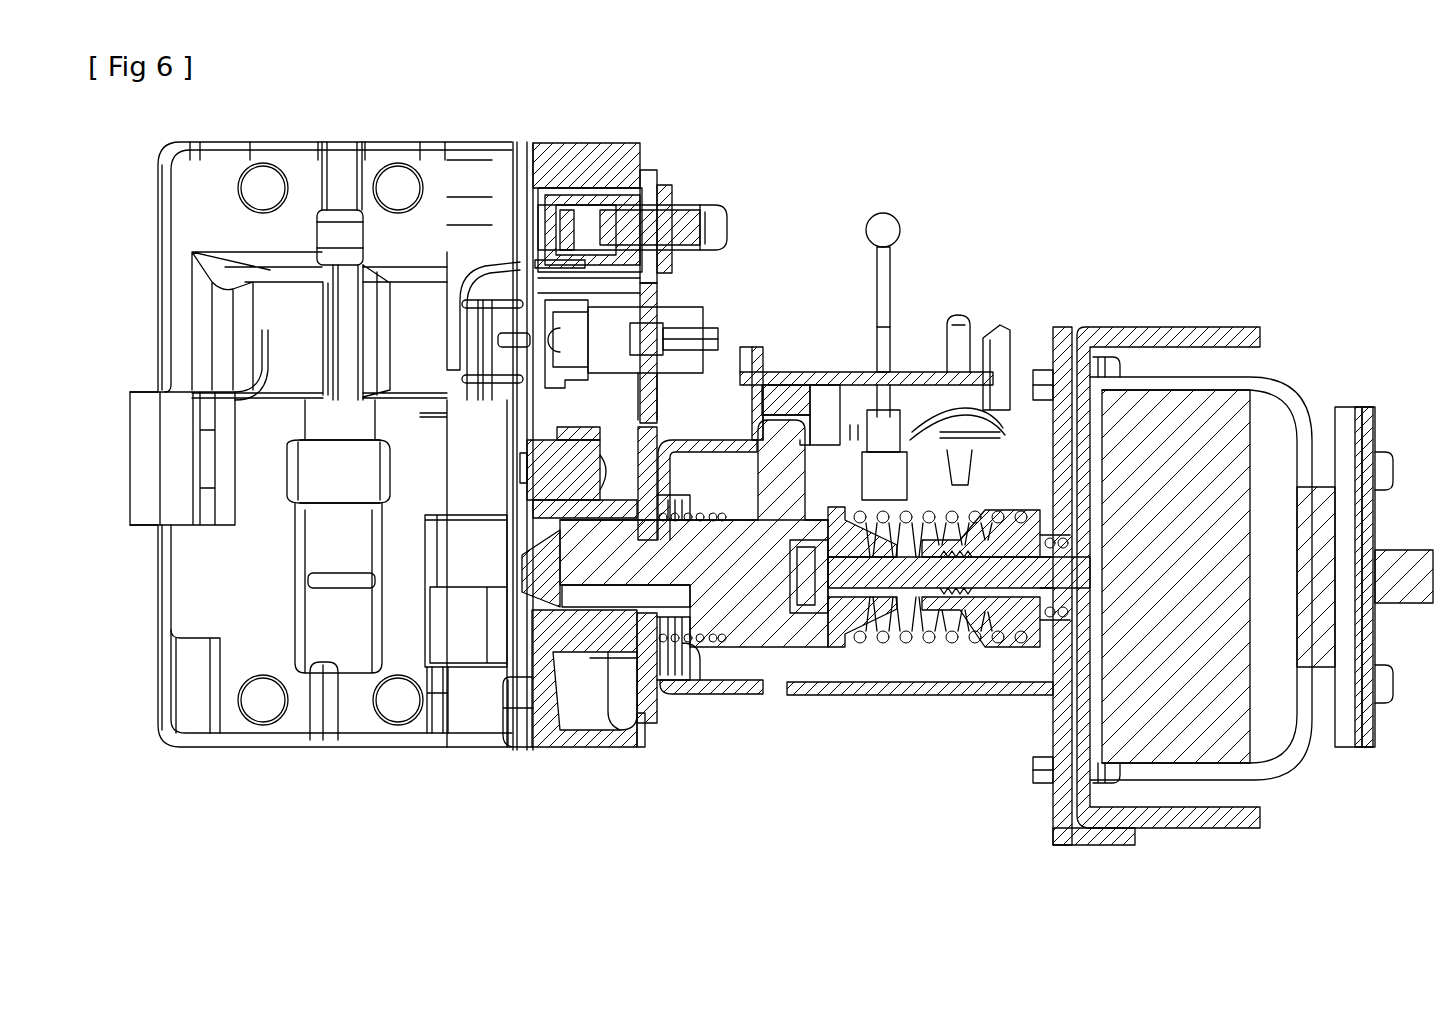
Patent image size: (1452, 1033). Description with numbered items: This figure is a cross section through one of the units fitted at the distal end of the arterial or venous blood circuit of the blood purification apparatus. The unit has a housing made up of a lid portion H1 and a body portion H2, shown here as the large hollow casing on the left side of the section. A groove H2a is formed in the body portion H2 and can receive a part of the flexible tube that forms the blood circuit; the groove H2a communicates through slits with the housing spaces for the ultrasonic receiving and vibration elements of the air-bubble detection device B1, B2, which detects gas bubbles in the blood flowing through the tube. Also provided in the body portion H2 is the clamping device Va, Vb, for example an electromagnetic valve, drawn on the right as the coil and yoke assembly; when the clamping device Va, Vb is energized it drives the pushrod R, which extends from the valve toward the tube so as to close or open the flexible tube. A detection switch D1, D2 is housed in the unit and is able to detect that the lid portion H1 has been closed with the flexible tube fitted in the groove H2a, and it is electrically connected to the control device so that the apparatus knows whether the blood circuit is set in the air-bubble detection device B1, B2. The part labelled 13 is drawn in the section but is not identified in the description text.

The lid portion H1 is at (222, 145).
The body portion H2 is at (545, 140).
The groove H2a is at (500, 750).
The air-bubble detection device B1 is at (586, 175).
The air-bubble detection device B2 is at (632, 227).
The connector terminal 13 is at (716, 312).
The detection switch D1 is at (506, 483).
The detection switch D2 is at (338, 621).
The pushrod R is at (758, 640).
The clamping device Va is at (885, 712).
The clamping device Vb is at (856, 687).